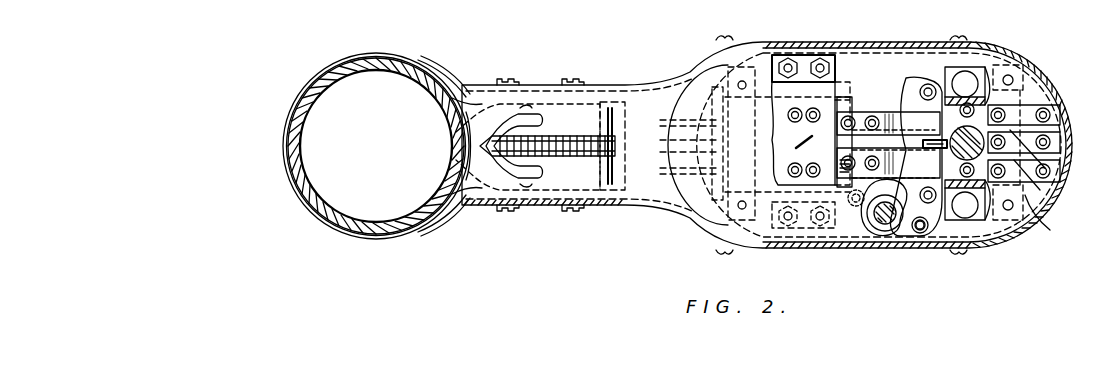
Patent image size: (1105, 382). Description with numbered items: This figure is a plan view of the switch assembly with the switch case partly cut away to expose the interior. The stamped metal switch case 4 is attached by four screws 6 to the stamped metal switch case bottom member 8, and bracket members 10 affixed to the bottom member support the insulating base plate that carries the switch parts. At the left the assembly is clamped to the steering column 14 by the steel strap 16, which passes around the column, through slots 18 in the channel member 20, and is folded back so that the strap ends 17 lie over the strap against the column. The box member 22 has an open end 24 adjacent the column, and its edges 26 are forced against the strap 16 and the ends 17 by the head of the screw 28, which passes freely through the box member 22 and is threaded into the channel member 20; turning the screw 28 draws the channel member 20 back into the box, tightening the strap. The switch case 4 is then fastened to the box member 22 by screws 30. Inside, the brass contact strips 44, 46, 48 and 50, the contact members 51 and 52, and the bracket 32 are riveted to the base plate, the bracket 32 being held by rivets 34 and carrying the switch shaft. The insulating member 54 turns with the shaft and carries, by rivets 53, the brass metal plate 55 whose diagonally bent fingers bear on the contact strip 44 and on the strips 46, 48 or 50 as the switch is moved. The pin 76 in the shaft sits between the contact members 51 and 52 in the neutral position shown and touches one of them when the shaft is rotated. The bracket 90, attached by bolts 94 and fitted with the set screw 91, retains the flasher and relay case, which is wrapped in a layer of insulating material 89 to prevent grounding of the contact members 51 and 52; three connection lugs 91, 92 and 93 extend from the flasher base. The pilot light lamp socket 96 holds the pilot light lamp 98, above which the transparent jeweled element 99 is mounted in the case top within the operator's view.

The switch case 4 is at (812, 46).
The screws 6 is at (718, 42).
The switch case bottom member 8 is at (866, 56).
The bracket members 10 is at (1034, 76).
The steering column 14 is at (345, 224).
The steel strap 16 is at (312, 88).
The ends of the strap 17 is at (444, 44).
The slots 18 is at (534, 192).
The channel member 20 is at (545, 160).
The box member 22 is at (612, 190).
The open end 24 is at (470, 156).
The edges of the open end 26 is at (464, 96).
The screw 28 is at (545, 132).
The screws 30 is at (572, 78).
The bracket 32 is at (986, 68).
The rivets 34 is at (962, 78).
The contact strip 44 is at (904, 104).
The contact strip 46 is at (1056, 198).
The contact strip 48 is at (1050, 128).
The contact strip 50 is at (1038, 106).
The contact member 51 is at (890, 118).
The contact member 52 is at (930, 162).
The rivets 53 is at (962, 106).
The insulating member 54 is at (1030, 196).
The metal plate 55 is at (1050, 166).
The pin 76 is at (930, 140).
The layer of insulating material 89 is at (840, 104).
The bracket 90 is at (790, 136).
The set screw 91 is at (680, 120).
The connection lug 92 is at (680, 142).
The connection lug 93 is at (680, 172).
The bolts 94 is at (786, 62).
The pilot light lamp socket 96 is at (908, 238).
The pilot light lamp 98 is at (890, 230).
The transparent jeweled element 99 is at (884, 232).